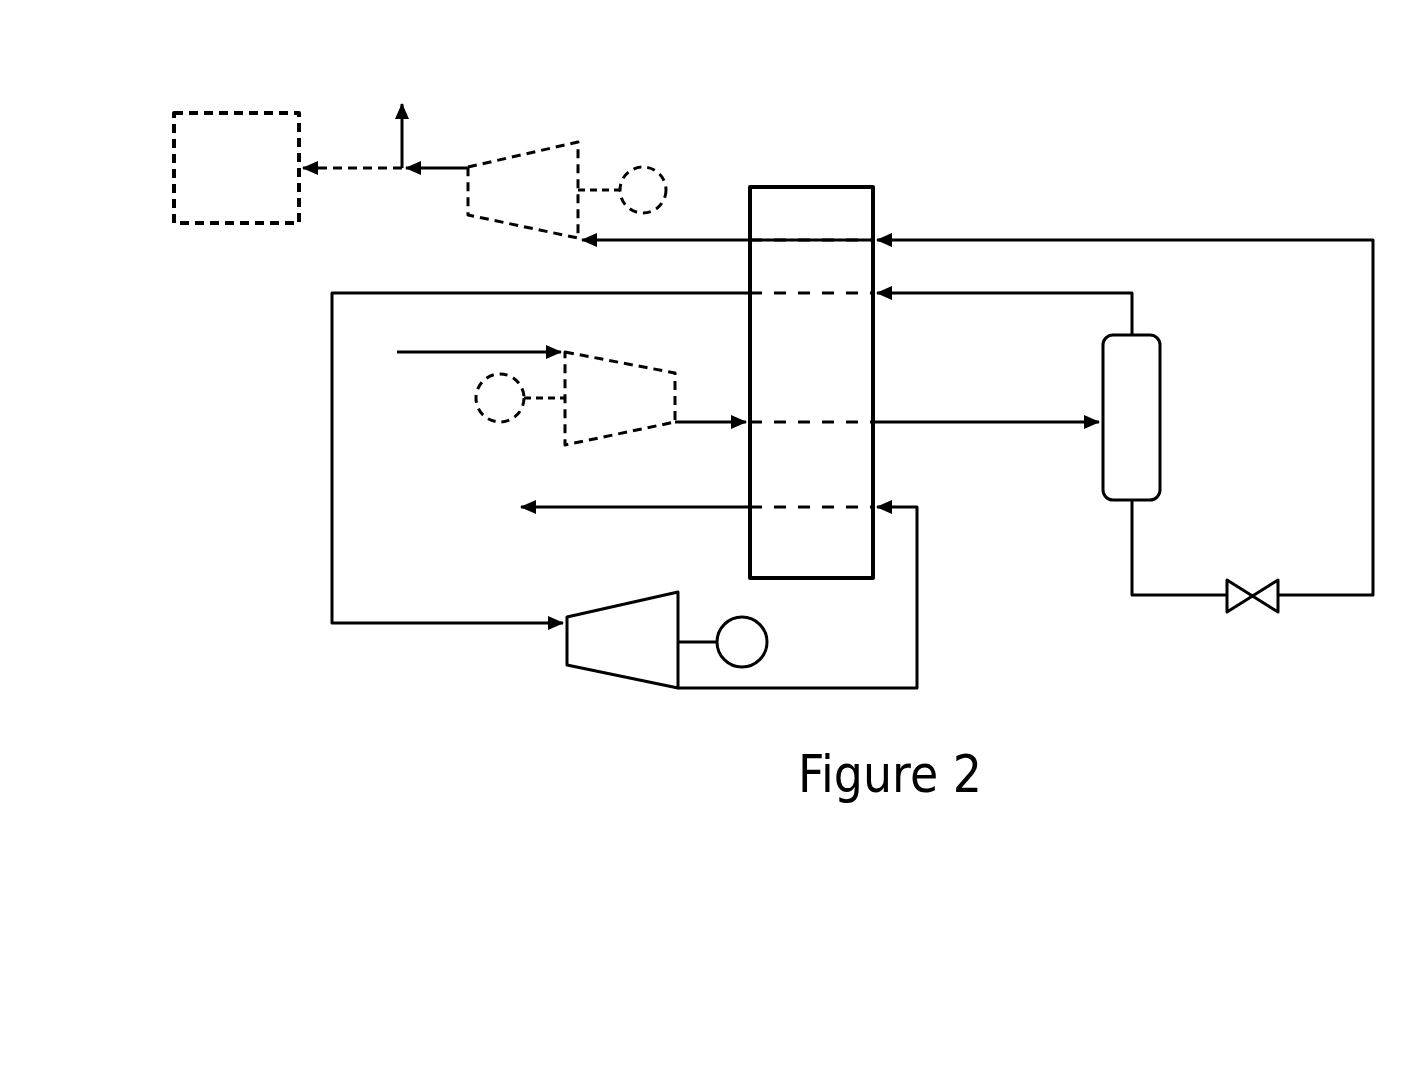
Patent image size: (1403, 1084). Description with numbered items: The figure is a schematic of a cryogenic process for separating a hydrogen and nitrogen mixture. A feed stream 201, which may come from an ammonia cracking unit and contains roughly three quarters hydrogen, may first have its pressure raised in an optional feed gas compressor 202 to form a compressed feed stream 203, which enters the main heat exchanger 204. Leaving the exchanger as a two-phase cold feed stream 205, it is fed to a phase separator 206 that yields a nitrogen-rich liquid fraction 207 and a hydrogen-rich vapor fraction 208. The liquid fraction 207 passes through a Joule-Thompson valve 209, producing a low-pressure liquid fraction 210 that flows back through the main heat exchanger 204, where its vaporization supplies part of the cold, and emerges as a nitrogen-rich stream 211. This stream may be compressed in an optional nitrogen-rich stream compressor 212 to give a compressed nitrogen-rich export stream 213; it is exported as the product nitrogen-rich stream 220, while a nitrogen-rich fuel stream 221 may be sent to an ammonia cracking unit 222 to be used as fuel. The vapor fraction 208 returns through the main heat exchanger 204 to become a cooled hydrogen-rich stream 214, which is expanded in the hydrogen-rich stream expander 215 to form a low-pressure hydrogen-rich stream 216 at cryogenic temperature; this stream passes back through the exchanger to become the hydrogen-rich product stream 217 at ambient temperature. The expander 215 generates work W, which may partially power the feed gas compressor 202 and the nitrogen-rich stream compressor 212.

The feed stream 201 is at (457, 353).
The feed gas compressor 202 is at (575, 398).
The compressed feed stream 203 is at (710, 406).
The main heat exchanger 204 is at (811, 382).
The cold feed stream 205 is at (986, 407).
The phase separator 206 is at (1131, 417).
The liquid fraction 207 is at (1179, 555).
The vapor fraction 208 is at (1004, 314).
The Joule-Thompson valve 209 is at (1254, 622).
The low-pressure liquid fraction 210 is at (1125, 409).
The nitrogen-rich stream 211 is at (727, 226).
The nitrogen-rich stream compressor 212 is at (567, 190).
The compressed nitrogen-rich export stream 213 is at (437, 153).
The cooled hydrogen-rich stream 214 is at (541, 472).
The hydrogen-rich stream expander 215 is at (667, 640).
The low-pressure hydrogen-rich stream 216 is at (797, 597).
The hydrogen-rich product stream 217 is at (610, 504).
The product nitrogen-rich stream 220 is at (404, 118).
The nitrogen-rich fuel stream 221 is at (352, 153).
The ammonia cracking unit 222 is at (236, 168).